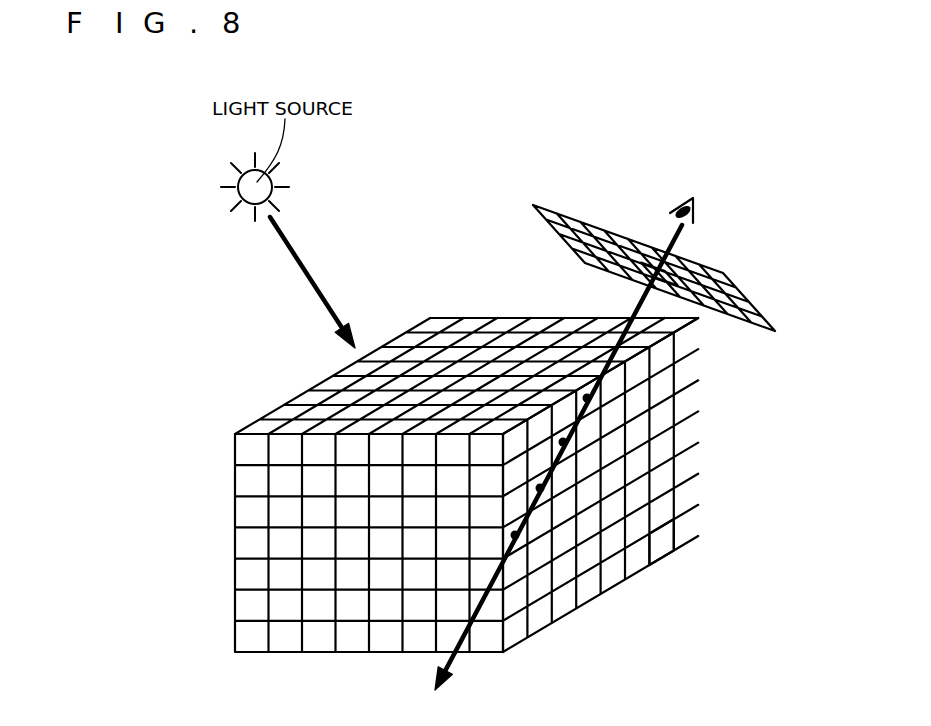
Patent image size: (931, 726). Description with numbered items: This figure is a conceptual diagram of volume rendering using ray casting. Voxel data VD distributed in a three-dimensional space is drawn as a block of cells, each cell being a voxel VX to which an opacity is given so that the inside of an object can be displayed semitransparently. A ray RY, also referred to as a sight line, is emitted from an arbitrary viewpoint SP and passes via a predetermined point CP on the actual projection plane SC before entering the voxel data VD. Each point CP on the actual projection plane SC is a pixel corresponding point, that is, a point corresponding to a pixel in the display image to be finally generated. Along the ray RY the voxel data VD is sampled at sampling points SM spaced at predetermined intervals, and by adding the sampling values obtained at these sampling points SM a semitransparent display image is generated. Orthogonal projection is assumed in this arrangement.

The voxel data VD is at (647, 575).
The voxel VX is at (662, 545).
The actual projection plane SC is at (746, 308).
The point on the actual projection plane CP is at (622, 240).
The viewpoint SP is at (695, 197).
The ray RY is at (627, 301).
The sampling points SM is at (515, 535).